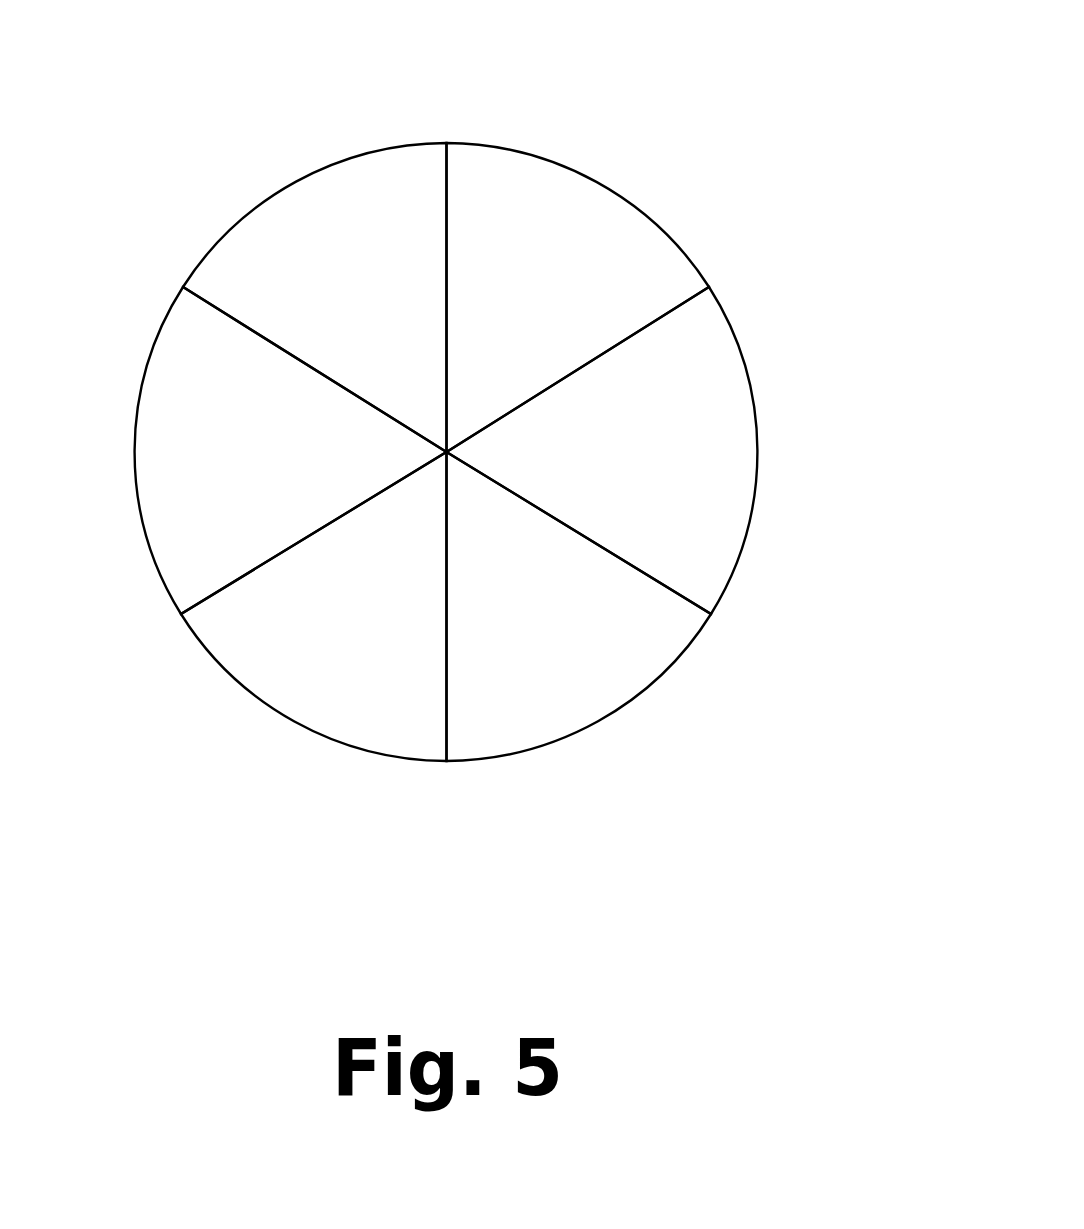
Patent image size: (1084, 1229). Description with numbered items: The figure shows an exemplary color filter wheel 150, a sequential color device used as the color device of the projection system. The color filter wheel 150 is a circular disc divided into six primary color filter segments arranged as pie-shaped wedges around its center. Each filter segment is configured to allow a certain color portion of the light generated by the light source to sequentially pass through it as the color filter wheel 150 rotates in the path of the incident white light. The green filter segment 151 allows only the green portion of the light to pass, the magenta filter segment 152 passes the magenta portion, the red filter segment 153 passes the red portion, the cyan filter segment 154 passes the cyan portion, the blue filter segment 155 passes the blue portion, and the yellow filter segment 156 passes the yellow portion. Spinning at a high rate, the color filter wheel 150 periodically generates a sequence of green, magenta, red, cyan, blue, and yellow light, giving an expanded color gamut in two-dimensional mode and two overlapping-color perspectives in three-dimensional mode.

The color filter wheel 150 is at (588, 116).
The green filter segment 151 is at (630, 247).
The magenta filter segment 152 is at (288, 220).
The red filter segment 153 is at (158, 440).
The cyan filter segment 154 is at (317, 697).
The blue filter segment 155 is at (563, 696).
The yellow filter segment 156 is at (733, 455).